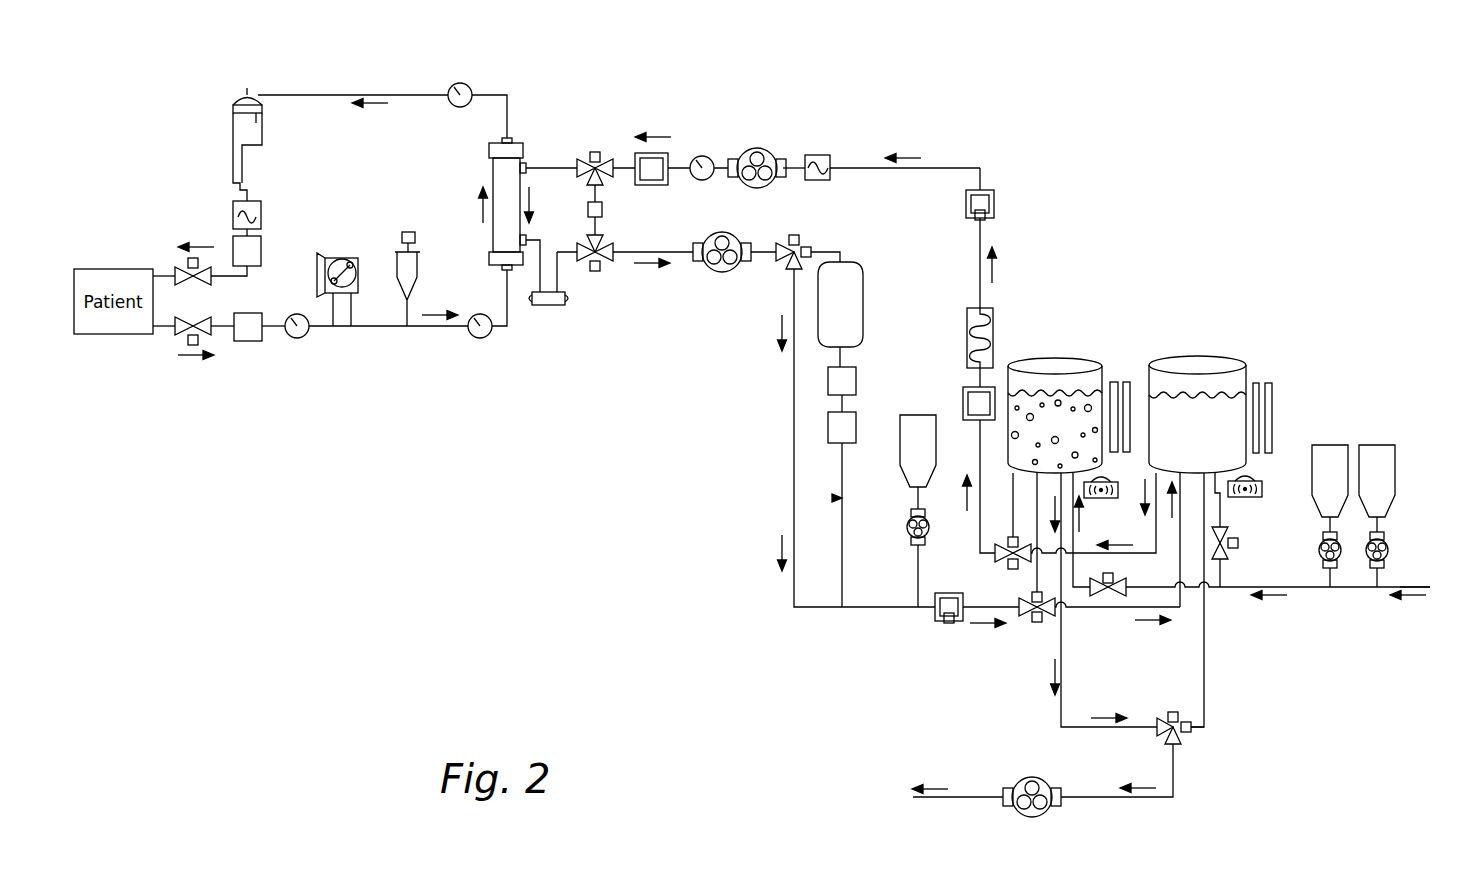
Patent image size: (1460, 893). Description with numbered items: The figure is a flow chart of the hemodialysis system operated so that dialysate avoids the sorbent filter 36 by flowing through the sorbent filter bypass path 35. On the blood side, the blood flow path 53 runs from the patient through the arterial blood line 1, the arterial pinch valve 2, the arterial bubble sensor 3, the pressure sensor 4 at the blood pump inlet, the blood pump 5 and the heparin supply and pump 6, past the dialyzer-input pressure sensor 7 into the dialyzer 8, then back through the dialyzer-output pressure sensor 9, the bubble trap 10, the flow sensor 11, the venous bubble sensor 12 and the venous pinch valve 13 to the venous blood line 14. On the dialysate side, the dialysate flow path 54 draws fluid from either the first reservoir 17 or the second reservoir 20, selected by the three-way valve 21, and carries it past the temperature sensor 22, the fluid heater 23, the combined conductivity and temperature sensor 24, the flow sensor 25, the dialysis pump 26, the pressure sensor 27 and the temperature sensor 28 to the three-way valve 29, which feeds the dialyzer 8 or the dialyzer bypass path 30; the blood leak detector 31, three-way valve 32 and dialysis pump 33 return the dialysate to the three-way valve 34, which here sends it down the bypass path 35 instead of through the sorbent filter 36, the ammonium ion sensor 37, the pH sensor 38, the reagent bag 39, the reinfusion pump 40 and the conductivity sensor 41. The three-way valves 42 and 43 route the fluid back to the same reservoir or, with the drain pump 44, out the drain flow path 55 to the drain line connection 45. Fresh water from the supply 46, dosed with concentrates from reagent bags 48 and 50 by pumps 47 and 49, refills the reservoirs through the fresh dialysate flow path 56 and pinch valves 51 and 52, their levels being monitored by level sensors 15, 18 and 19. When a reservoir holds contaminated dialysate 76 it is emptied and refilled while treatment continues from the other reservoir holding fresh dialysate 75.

The arterial blood line 1 is at (162, 330).
The pinch valve, arterial line 2 is at (207, 332).
The bubble sensor, arterial line 3 is at (256, 342).
The pressure sensor, blood pump inlet 4 is at (300, 338).
The blood pump 5 is at (350, 258).
The heparin supply and pump 6 is at (410, 232).
The pressure sensor, dialyzer input 7 is at (484, 338).
The dialyzer 8 is at (523, 148).
The pressure sensor, dialyzer output 9 is at (460, 108).
The bubble trap 10 is at (262, 135).
The flow sensor, blood circuit 11 is at (233, 212).
The bubble sensor, venous line 12 is at (261, 252).
The pinch valve, venous line 13 is at (185, 268).
The venous blood line 14 is at (160, 272).
The primary level sensor, first reservoir 15 is at (1268, 383).
The first reservoir 17 is at (1205, 356).
The primary level sensor, second reservoir 18 is at (1126, 382).
The secondary level sensor, second reservoir 19 is at (1090, 500).
The second reservoir 20 is at (1055, 358).
The 3-way valve, reservoir outlet 21 is at (1008, 563).
The temperature sensor, heater inlet 22 is at (990, 387).
The fluid heater 23 is at (993, 332).
The combined conductivity and temperature sensor 24 is at (996, 202).
The flow sensor, dialysis circuit 25 is at (830, 162).
The dialysis pump, dialyzer inlet 26 is at (766, 150).
The pressure sensor, dialysis circuit 27 is at (709, 158).
The temperature sensor, dialyzer inlet 28 is at (668, 162).
The 3-way valve, dialyzer inlet 29 is at (597, 152).
The bypass path, dialyzer 30 is at (602, 210).
The blood leak detector 31 is at (548, 306).
The 3-way valve, dialyzer outlet 32 is at (597, 272).
The dialysis pump, dialyzer outlet 33 is at (715, 272).
The 3-way valve, sorbent filter bypass 34 is at (800, 238).
The sorbent filter bypass path 35 is at (794, 440).
The sorbent filter 36 is at (863, 287).
The ammonium ion sensor 37 is at (857, 382).
The pH sensor 38 is at (850, 443).
The reagent bag 39 is at (920, 415).
The pump, sorbent filter reinfusion 40 is at (906, 532).
The conductivity sensor, sorbent filter outlet 41 is at (936, 621).
The 3-way valve, reservoir recirculation 42 is at (1037, 623).
The 3-way valve, reservoir drain 43 is at (1171, 712).
The pump, reservoir drain 44 is at (1020, 780).
The drain line connection 45 is at (925, 800).
The fresh dialysate supply 46 is at (1430, 590).
The pump 47 is at (1386, 552).
The reagent bag 48 is at (1377, 445).
The pump 49 is at (1322, 552).
The reagent bag 50 is at (1330, 445).
The pinch valve, first reservoir inlet 51 is at (1238, 546).
The pinch valve, second reservoir inlet 52 is at (1113, 578).
The blood flow path 53 is at (378, 328).
The dialysate flow path 54 is at (955, 168).
The drain flow path 55 is at (1204, 693).
The fresh dialysate flow path 56 is at (1295, 590).
The fresh dialysate 75 is at (1197, 416).
The contaminated dialysate 76 is at (1061, 402).